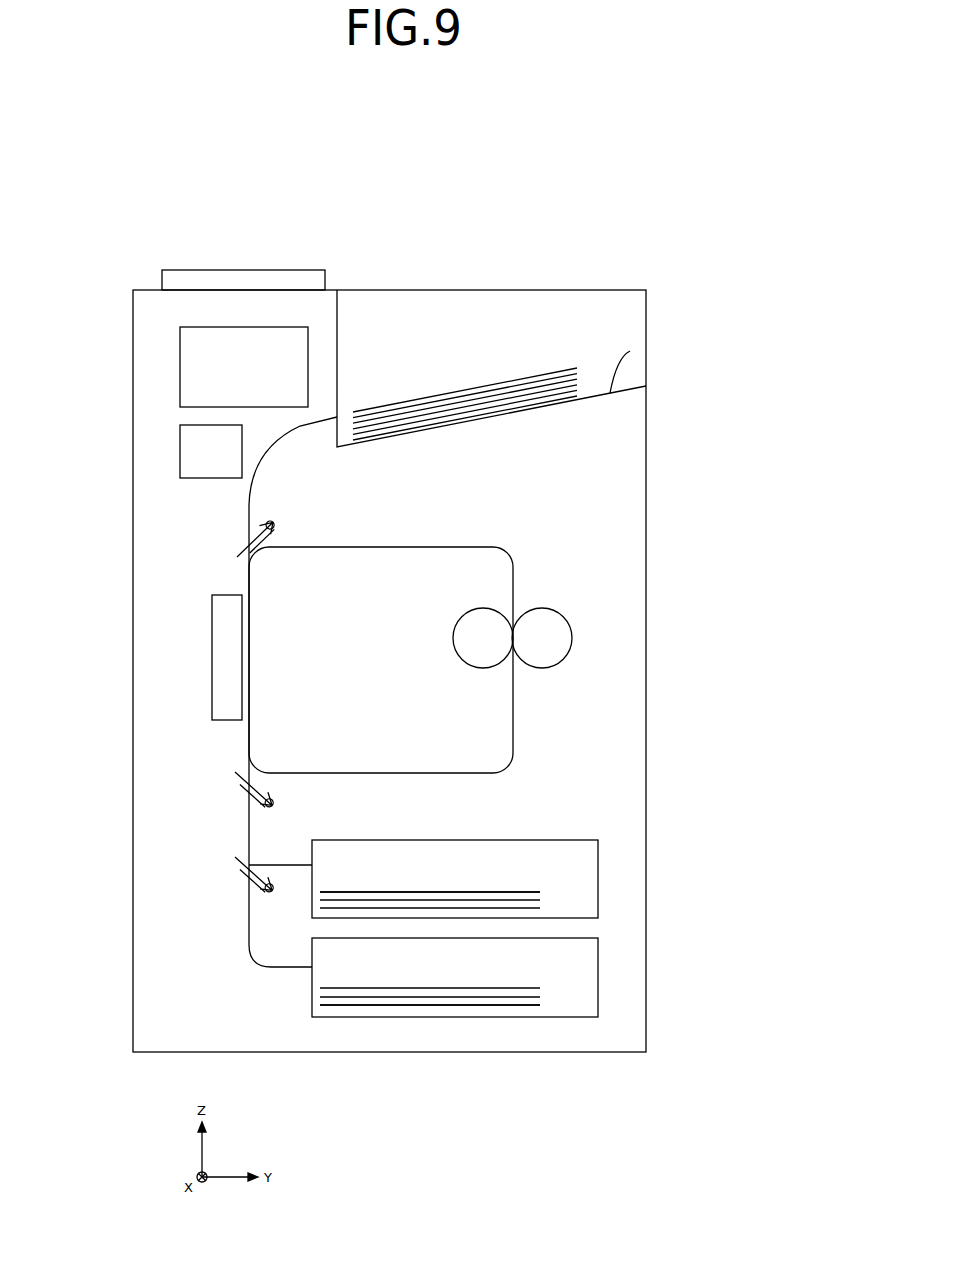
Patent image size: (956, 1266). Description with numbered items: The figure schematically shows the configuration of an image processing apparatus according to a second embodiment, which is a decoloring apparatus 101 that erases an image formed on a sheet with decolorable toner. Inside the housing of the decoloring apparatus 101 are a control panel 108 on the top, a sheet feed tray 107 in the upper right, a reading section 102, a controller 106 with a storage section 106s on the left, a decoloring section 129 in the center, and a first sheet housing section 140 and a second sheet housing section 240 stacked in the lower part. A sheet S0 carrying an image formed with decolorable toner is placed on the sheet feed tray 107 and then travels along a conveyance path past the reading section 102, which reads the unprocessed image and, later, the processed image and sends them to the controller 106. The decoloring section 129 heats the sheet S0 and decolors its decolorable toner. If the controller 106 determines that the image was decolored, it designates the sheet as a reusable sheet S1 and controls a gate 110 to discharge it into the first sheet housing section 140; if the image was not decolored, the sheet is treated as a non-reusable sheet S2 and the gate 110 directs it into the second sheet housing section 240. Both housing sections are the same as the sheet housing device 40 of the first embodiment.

The decoloring apparatus 101 is at (633, 210).
The reading section 102 is at (212, 655).
The controller 106 is at (180, 364).
The storage section 106s is at (180, 452).
The sheet feed tray 107 is at (630, 351).
The control panel 108 is at (258, 270).
The gate 110 is at (242, 860).
The decoloring section 129 is at (577, 637).
The first sheet housing section 140 is at (598, 875).
The second sheet housing section 240 is at (598, 978).
The sheet housing device 40 is at (525, 928).
The sheet S0 is at (502, 383).
The reusable sheet S1 is at (475, 890).
The non-reusable sheet S2 is at (483, 1007).